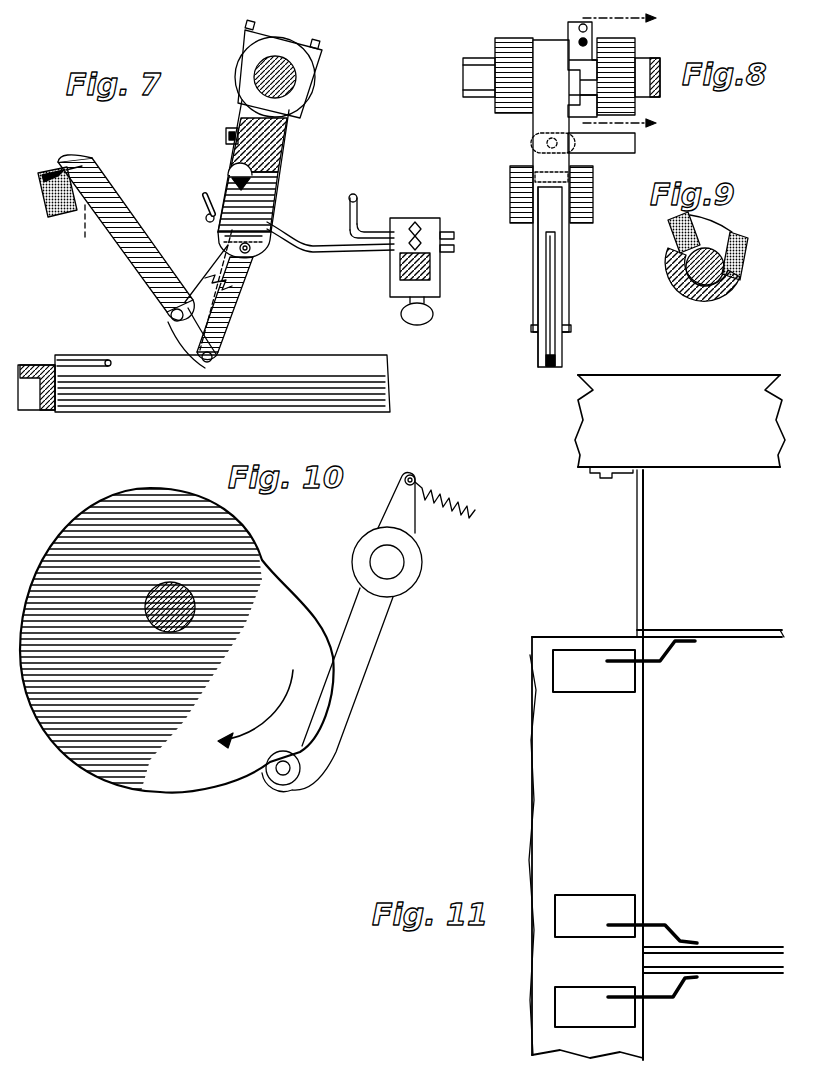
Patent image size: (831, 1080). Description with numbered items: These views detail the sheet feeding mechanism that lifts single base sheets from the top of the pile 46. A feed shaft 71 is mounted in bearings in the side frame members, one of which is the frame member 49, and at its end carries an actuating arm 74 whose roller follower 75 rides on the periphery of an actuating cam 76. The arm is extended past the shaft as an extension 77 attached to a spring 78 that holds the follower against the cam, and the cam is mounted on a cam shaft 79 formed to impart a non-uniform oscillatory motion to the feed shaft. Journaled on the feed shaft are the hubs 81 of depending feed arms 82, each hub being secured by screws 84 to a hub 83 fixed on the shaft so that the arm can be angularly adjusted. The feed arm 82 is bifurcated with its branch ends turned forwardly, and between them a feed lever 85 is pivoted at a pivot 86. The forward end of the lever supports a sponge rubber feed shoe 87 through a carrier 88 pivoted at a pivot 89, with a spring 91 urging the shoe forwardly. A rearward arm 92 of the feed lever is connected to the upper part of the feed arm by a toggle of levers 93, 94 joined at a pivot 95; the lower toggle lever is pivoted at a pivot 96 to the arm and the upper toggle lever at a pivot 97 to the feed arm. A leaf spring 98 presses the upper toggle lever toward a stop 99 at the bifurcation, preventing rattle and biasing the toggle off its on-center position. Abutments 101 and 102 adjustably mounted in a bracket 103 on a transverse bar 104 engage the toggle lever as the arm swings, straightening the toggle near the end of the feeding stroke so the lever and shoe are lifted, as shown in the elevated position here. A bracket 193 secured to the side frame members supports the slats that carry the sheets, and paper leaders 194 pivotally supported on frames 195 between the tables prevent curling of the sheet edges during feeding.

In FIG. 7, the pile 46 is at (133, 392).
In FIG. 11, the side frame member 49 is at (736, 450).
In FIG. 7, the feed shaft 71 is at (280, 80).
In FIG. 8, the feed shaft 71 is at (480, 72).
In FIG. 9, the feed shaft 71 is at (686, 268).
In FIG. 10, the feed shaft 71 is at (392, 561).
In FIG. 10, the actuating arm 74 is at (388, 602).
In FIG. 10, the roller follower 75 is at (270, 780).
In FIG. 10, the actuating cam 76 is at (182, 762).
In FIG. 10, the arm extension 77 is at (400, 500).
In FIG. 10, the spring 78 is at (470, 500).
In FIG. 10, the cam shaft 79 is at (196, 612).
In FIG. 7, the hub 81 is at (308, 61).
In FIG. 8, the hub 81 is at (548, 45).
In FIG. 7, the feed arm 82 is at (275, 120).
In FIG. 8, the feed arm 82 is at (545, 122).
In FIG. 9, the feed arm 82 is at (670, 292).
In FIG. 8, the hub 83 is at (625, 58).
In FIG. 9, the hub 83 is at (744, 275).
In FIG. 8, the screw 84 is at (600, 32).
In FIG. 9, the screw 84 is at (738, 218).
In FIG. 7, the feed lever 85 is at (143, 230).
In FIG. 7, the pivot 86 is at (170, 314).
In FIG. 7, the feed shoe 87 is at (40, 203).
In FIG. 7, the carrier 88 is at (46, 172).
In FIG. 8, the carrier 88 is at (580, 175).
In FIG. 7, the pivot 89 is at (88, 178).
In FIG. 7, the spring 91 is at (85, 240).
In FIG. 7, the arm 92 is at (188, 352).
In FIG. 7, the toggle lever 93 is at (228, 325).
In FIG. 8, the toggle lever 93 is at (548, 352).
In FIG. 7, the toggle lever 94 is at (258, 218).
In FIG. 8, the toggle lever 94 is at (551, 205).
In FIG. 7, the pivot 95 is at (250, 253).
In FIG. 8, the pivot 95 is at (556, 248).
In FIG. 7, the pivot 96 is at (216, 352).
In FIG. 7, the pivot 97 is at (232, 170).
In FIG. 7, the leaf spring 98 is at (228, 158).
In FIG. 7, the stop 99 is at (265, 180).
In FIG. 7, the abutment 101 is at (198, 205).
In FIG. 7, the abutment 102 is at (366, 180).
In FIG. 7, the bracket 103 is at (425, 215).
In FIG. 7, the bar 104 is at (400, 265).
In FIG. 11, the bracket 193 is at (640, 551).
In FIG. 11, the paper leader 194 is at (652, 665).
In FIG. 11, the frame 195 is at (745, 640).